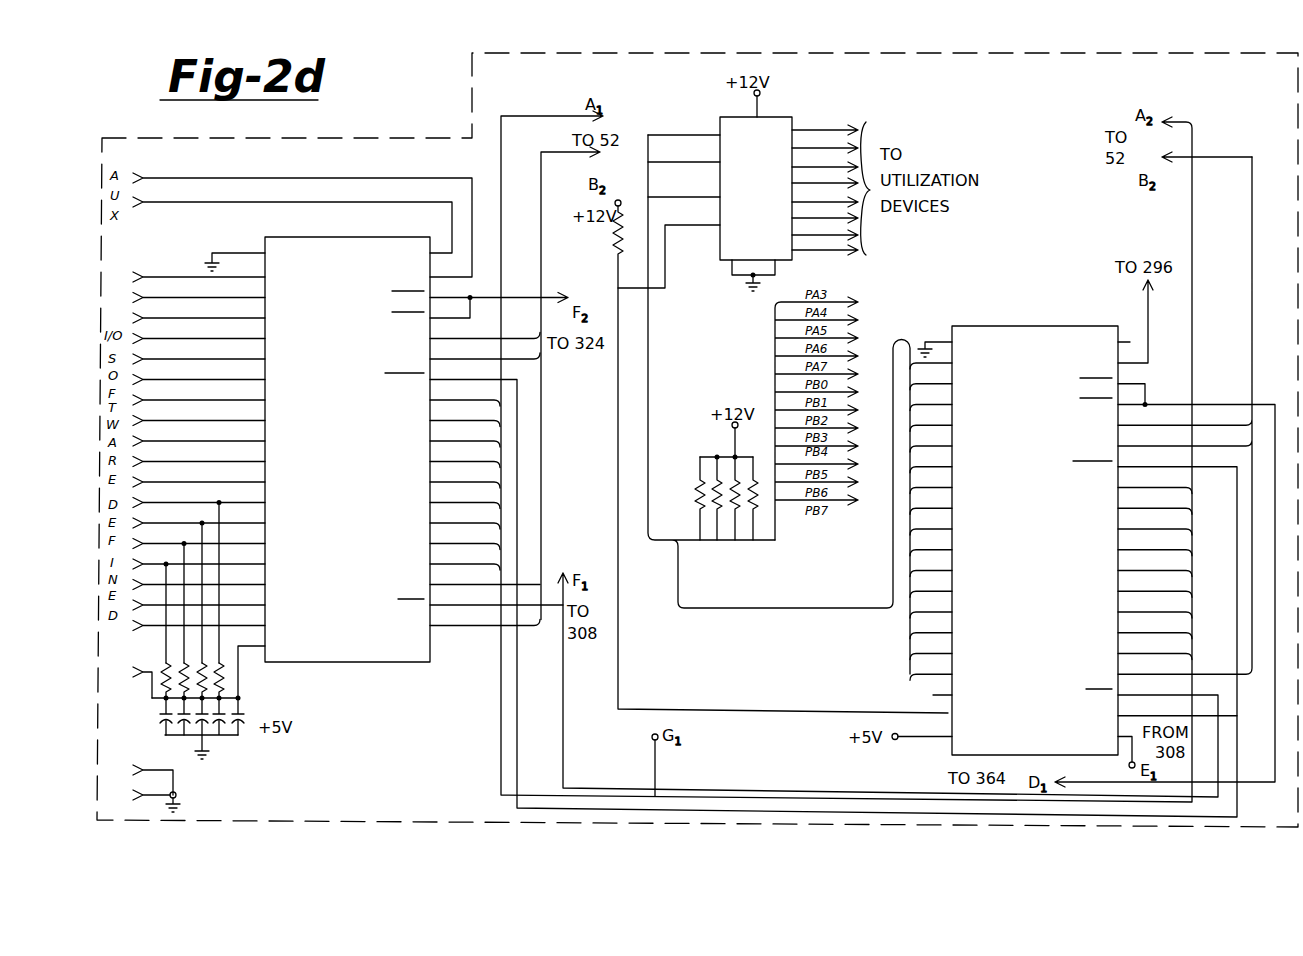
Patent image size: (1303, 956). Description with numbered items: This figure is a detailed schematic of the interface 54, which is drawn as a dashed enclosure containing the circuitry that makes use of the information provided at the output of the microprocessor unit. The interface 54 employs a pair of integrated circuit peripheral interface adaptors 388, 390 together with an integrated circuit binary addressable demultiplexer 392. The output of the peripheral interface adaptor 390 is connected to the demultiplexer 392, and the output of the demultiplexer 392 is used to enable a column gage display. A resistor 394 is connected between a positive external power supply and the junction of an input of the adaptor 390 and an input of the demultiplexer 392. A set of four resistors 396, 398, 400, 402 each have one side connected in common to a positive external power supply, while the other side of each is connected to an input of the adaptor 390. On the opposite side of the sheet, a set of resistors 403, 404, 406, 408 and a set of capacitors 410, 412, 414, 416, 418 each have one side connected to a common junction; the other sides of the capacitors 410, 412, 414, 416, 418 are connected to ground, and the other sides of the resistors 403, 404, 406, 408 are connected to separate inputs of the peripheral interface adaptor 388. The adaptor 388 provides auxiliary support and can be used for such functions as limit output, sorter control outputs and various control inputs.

The interface 54 is at (441, 128).
The peripheral interface adaptor 388 is at (345, 665).
The peripheral interface adaptor 390 is at (1076, 322).
The binary addressable demultiplexer 392 is at (738, 106).
The resistor 394 is at (614, 244).
The resistor 396 is at (698, 484).
The resistor 398 is at (716, 508).
The resistor 400 is at (733, 508).
The resistor 402 is at (752, 508).
The resistor 403 is at (164, 671).
The resistor 404 is at (182, 668).
The resistor 406 is at (224, 672).
The resistor 408 is at (224, 690).
The capacitor 410 is at (168, 728).
The capacitor 412 is at (168, 708).
The capacitor 414 is at (200, 733).
The capacitor 416 is at (214, 740).
The capacitor 418 is at (240, 738).